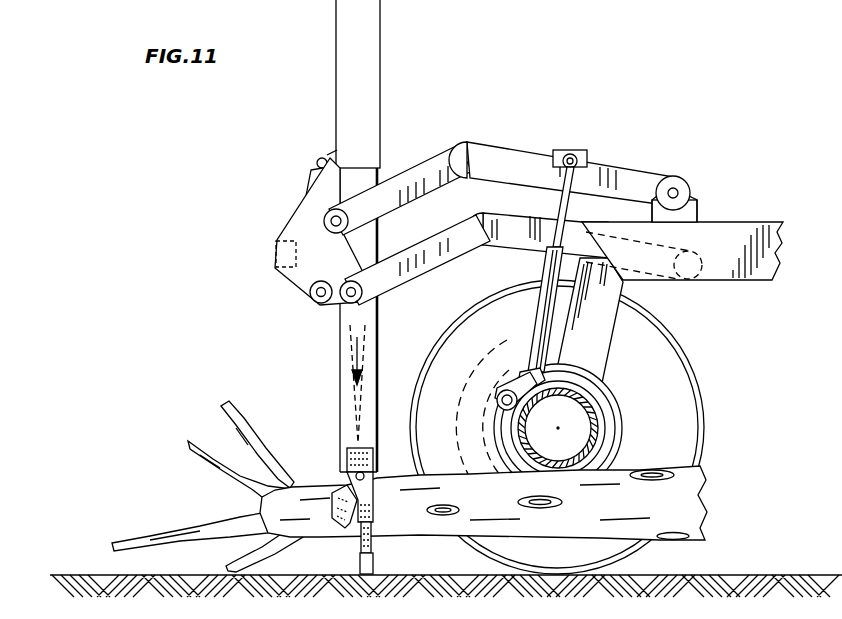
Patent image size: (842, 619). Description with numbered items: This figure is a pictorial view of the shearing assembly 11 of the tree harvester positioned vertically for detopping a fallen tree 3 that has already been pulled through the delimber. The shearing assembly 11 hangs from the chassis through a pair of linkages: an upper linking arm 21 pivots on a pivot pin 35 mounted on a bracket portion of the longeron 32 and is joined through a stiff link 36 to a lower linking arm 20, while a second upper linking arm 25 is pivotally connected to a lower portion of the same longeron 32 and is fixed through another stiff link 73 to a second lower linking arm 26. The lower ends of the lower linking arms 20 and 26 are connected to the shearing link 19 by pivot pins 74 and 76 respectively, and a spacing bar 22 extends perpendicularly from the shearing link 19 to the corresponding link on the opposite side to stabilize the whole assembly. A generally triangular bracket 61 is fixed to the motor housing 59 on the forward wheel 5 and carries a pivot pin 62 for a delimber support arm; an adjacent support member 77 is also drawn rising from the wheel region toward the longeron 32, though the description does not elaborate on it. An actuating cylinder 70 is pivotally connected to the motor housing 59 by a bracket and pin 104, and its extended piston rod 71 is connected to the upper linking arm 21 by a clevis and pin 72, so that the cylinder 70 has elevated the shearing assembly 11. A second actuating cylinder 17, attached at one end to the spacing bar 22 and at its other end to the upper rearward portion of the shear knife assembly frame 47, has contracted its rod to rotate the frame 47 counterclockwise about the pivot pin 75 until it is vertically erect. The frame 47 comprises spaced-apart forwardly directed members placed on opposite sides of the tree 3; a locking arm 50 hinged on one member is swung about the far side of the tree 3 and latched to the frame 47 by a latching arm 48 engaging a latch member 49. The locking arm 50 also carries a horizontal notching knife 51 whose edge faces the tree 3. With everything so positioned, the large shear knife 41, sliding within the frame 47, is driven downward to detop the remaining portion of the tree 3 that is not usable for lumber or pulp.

The tree 3 is at (655, 466).
The forward wheel 5 is at (703, 392).
The shearing assembly 11 is at (380, 68).
The actuating cylinder 17 is at (316, 190).
The shearing link 19 is at (293, 232).
The lower linking arm 20 is at (410, 153).
The upper linking arm 21 is at (626, 168).
The spacing bar 22 is at (277, 258).
The upper linking arm 25 is at (537, 255).
The lower linking arm 26 is at (416, 234).
The longeron 32 is at (734, 220).
The pivot pin 35 is at (675, 190).
The stiff link 36 is at (461, 141).
The shear knife 41 is at (367, 364).
The shear knife assembly frame 47 is at (378, 345).
The latching arm 48 is at (331, 516).
The latch member 49 is at (372, 515).
The locking arm 50 is at (373, 563).
The notching knife 51 is at (372, 545).
The motor housing 59 is at (597, 417).
The bracket 61 is at (512, 426).
The pivot pin 62 is at (497, 404).
The actuating cylinder 70 is at (537, 321).
The piston rod 71 is at (560, 214).
The clevis and pin 72 is at (580, 170).
The stiff link 73 is at (481, 214).
The pivot pin 74 is at (348, 221).
The pivot pin 75 is at (320, 304).
The pivot pin 76 is at (363, 289).
The support body 77 is at (612, 340).
The bracket and pin 104 is at (524, 377).